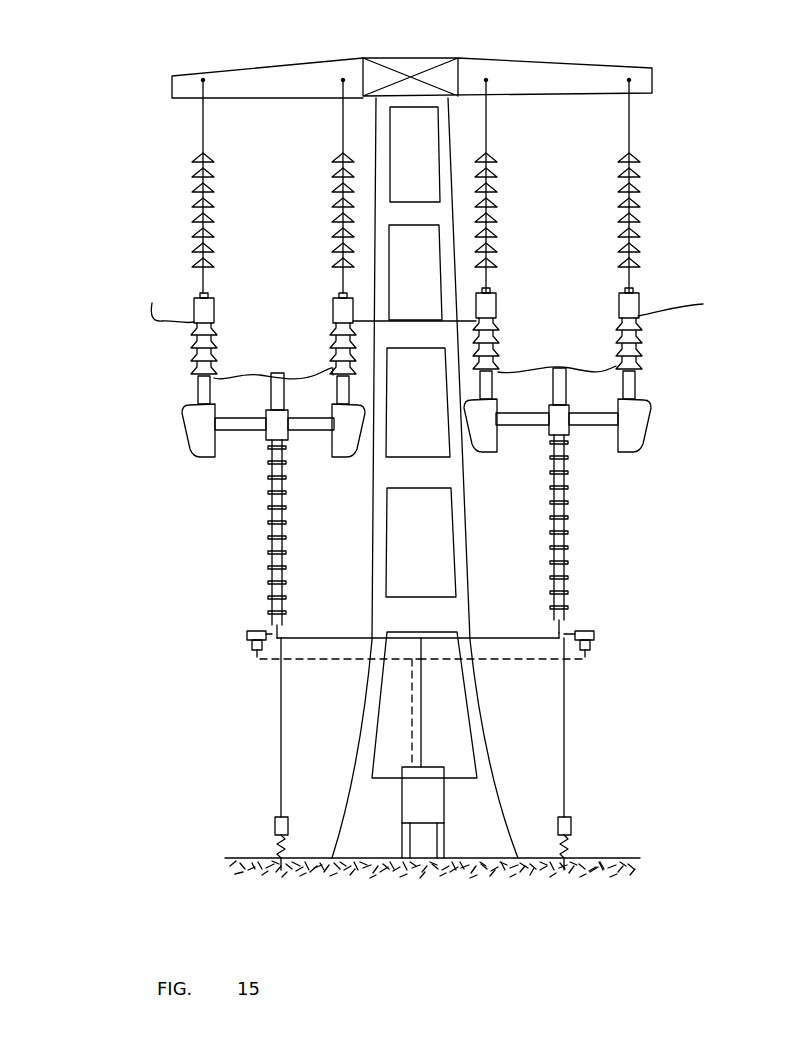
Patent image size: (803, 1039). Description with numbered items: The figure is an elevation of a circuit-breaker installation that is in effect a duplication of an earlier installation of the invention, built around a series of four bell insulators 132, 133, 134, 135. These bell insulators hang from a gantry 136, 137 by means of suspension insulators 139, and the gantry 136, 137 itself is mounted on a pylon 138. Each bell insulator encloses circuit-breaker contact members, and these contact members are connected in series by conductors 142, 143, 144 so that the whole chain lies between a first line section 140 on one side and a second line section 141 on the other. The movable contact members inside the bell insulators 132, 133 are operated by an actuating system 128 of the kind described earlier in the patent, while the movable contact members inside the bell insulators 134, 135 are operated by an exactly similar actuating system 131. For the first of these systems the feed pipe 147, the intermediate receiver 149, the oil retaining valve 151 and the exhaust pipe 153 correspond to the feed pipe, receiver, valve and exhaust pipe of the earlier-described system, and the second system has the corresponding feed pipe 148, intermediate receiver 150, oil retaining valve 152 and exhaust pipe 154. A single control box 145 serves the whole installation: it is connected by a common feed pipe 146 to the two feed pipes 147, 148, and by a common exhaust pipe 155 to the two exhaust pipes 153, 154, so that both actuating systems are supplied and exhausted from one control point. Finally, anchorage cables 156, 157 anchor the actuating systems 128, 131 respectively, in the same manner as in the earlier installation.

The actuating system 128 is at (261, 547).
The actuating system 131 is at (571, 539).
The bell insulator 132 is at (193, 338).
The bell insulator 133 is at (332, 350).
The bell insulator 134 is at (500, 355).
The bell insulator 135 is at (640, 347).
The gantry 136 is at (272, 78).
The gantry 137 is at (523, 75).
The pylon 138 is at (418, 205).
The suspension insulators 139 is at (198, 205).
The line section 140 is at (159, 300).
The line section 141 is at (662, 310).
The conductor 142 is at (233, 375).
The conductor 143 is at (402, 309).
The conductor 144 is at (592, 369).
The control box 145 is at (443, 810).
The common feed pipe 146 is at (424, 720).
The feed pipe 147 is at (347, 638).
The feed pipe 148 is at (490, 638).
The intermediate receiver 149 is at (271, 397).
The intermediate receiver 150 is at (563, 393).
The oil retaining valve 151 is at (250, 647).
The oil retaining valve 152 is at (590, 643).
The exhaust pipe 153 is at (313, 660).
The exhaust pipe 154 is at (530, 660).
The common exhaust pipe 155 is at (412, 752).
The anchorage cable 156 is at (281, 780).
The anchorage cable 157 is at (565, 775).